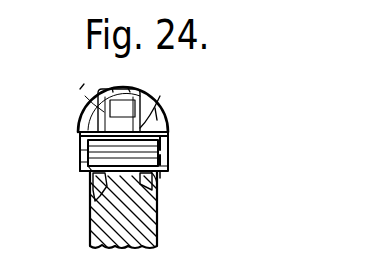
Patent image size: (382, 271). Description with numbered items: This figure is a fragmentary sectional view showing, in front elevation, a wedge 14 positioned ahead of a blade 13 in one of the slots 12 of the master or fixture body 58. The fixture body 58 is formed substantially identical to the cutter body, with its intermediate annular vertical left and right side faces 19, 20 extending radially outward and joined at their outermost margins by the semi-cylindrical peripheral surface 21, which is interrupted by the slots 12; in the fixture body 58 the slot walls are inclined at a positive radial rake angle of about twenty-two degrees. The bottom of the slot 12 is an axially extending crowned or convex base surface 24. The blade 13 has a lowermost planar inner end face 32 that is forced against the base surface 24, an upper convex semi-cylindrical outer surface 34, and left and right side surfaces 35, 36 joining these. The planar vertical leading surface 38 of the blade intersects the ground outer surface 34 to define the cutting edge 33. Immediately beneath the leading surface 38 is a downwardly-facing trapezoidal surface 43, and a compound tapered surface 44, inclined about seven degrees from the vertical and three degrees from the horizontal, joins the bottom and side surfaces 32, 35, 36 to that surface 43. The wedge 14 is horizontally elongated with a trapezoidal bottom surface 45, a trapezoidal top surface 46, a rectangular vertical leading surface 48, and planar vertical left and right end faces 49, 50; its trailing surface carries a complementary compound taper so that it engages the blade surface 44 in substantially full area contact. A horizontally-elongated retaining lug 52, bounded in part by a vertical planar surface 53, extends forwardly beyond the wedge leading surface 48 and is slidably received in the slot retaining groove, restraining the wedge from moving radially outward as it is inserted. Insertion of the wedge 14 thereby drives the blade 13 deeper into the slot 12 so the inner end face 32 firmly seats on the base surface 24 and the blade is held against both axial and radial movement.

The slot 12 is at (80, 146).
The blade 13 is at (172, 106).
The wedge 14 is at (82, 142).
The left side face 19 is at (160, 239).
The right side face 20 is at (90, 240).
The peripheral surface 21 is at (84, 83).
The base surface 24 is at (170, 148).
The inner end face 32 is at (86, 176).
The cutting edge 33 is at (112, 91).
The outer surface 34 is at (129, 90).
The left side surface 35 is at (171, 169).
The right side surface 36 is at (81, 162).
The leading surface 38 is at (127, 110).
The downwardly-facing surface 43 is at (166, 138).
The tapered surface 44 is at (82, 153).
The bottom surface 45 is at (157, 199).
The top surface 46 is at (160, 96).
The leading surface 48 is at (93, 92).
The left end face 49 is at (172, 158).
The right end face 50 is at (84, 170).
The retaining lug 52 is at (94, 203).
The vertical planar surface 53 is at (170, 180).
The fixture body 58 is at (158, 216).